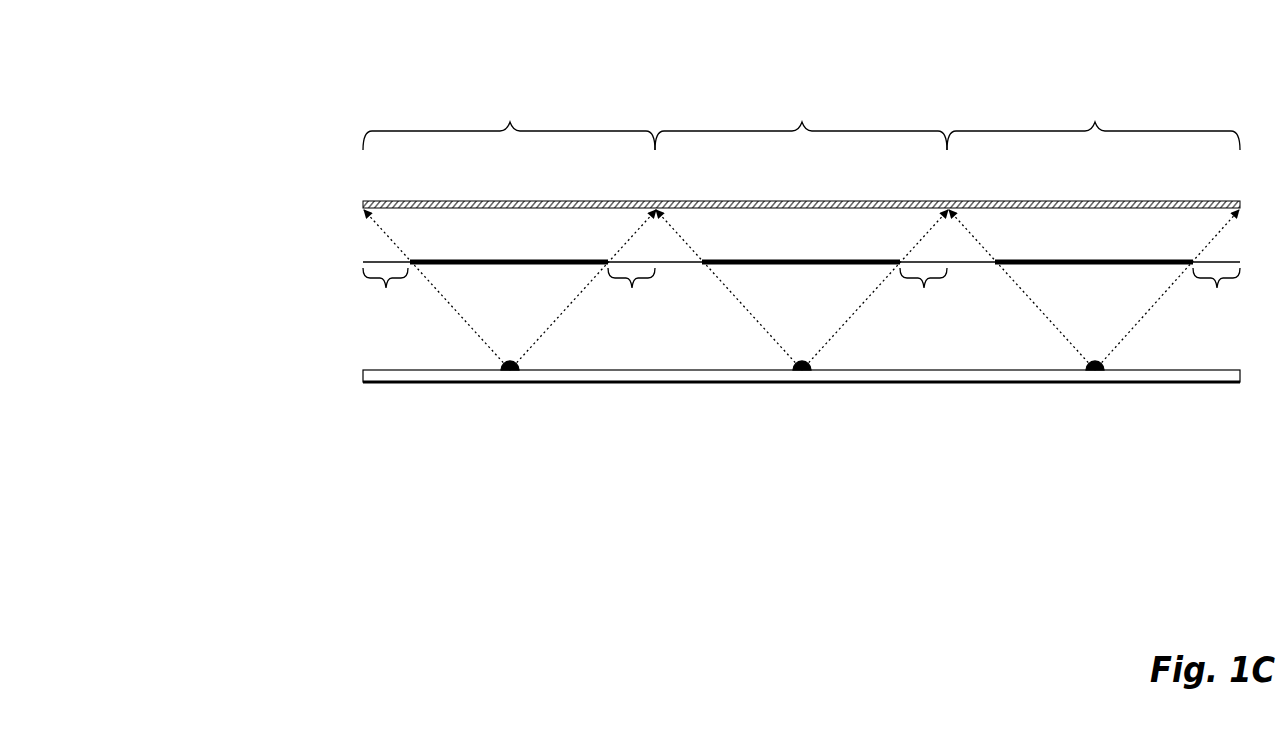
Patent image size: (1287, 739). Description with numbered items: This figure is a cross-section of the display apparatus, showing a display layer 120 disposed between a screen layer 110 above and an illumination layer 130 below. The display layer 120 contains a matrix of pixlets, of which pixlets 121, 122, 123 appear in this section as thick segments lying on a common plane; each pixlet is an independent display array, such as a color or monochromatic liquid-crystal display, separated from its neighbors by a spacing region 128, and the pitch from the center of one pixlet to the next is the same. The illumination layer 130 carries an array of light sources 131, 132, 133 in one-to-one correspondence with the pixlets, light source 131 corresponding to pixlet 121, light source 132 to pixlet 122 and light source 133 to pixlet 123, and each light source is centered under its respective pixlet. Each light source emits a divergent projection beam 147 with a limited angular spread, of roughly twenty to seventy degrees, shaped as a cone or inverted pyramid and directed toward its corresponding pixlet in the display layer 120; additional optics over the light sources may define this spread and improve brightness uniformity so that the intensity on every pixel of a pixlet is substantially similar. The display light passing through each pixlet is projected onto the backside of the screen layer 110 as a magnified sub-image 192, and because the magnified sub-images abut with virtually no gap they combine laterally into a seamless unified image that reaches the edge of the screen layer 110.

The screen layer 110 is at (318, 204).
The display layer 120 is at (323, 262).
The pixlet 121 is at (516, 259).
The pixlet 122 is at (808, 259).
The pixlet 123 is at (1101, 259).
The spacing region 128 is at (801, 294).
The illumination layer 130 is at (323, 378).
The light source 131 is at (510, 378).
The light source 132 is at (803, 378).
The light source 133 is at (1096, 378).
The divergent projection beam 147 is at (457, 303).
The magnified sub-image 192 is at (801, 107).